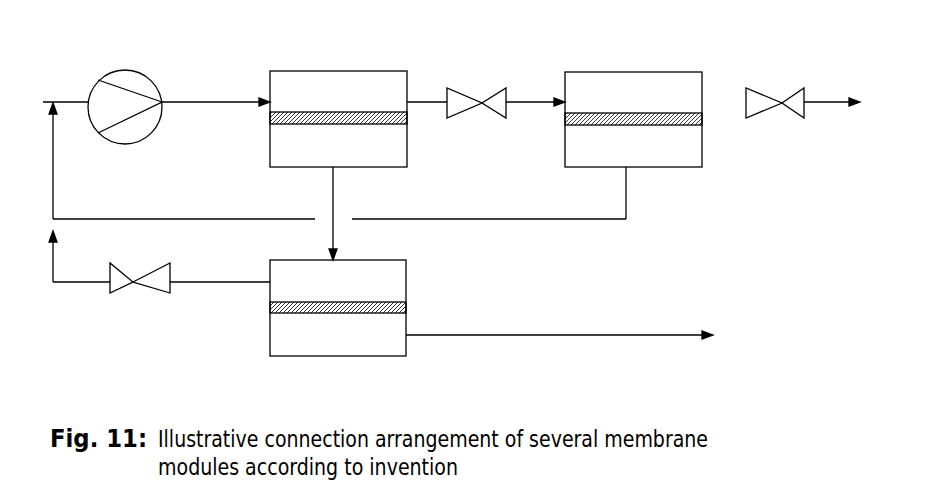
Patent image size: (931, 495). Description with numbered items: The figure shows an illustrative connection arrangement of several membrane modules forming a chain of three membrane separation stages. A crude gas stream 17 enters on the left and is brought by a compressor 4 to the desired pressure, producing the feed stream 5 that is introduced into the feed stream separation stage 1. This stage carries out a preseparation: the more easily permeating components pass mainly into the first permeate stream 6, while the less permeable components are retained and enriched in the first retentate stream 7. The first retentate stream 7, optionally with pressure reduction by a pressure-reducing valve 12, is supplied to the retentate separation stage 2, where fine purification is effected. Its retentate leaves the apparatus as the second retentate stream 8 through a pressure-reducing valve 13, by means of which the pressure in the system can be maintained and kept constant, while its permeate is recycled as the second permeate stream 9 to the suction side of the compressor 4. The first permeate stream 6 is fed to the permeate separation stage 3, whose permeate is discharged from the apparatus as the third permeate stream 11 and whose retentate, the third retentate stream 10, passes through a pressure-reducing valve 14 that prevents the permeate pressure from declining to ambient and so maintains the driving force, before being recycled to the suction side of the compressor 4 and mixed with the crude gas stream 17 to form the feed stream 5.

The feed stream separation stage 1 is at (338, 100).
The retentate separation stage 2 is at (633, 104).
The permeate separation stage 3 is at (338, 321).
The compressor 4 is at (125, 91).
The feed stream 5 is at (216, 89).
The first permeate stream 6 is at (343, 213).
The first retentate stream 7 is at (486, 89).
The second retentate stream 8 is at (832, 89).
The second permeate stream 9 is at (339, 161).
The third retentate stream 10 is at (159, 256).
The third permeate stream 11 is at (559, 319).
The pressure-reducing valve 12 is at (476, 89).
The pressure-reducing valve 13 is at (775, 91).
The pressure-reducing valve 14 is at (140, 267).
The crude gas stream 17 is at (65, 86).